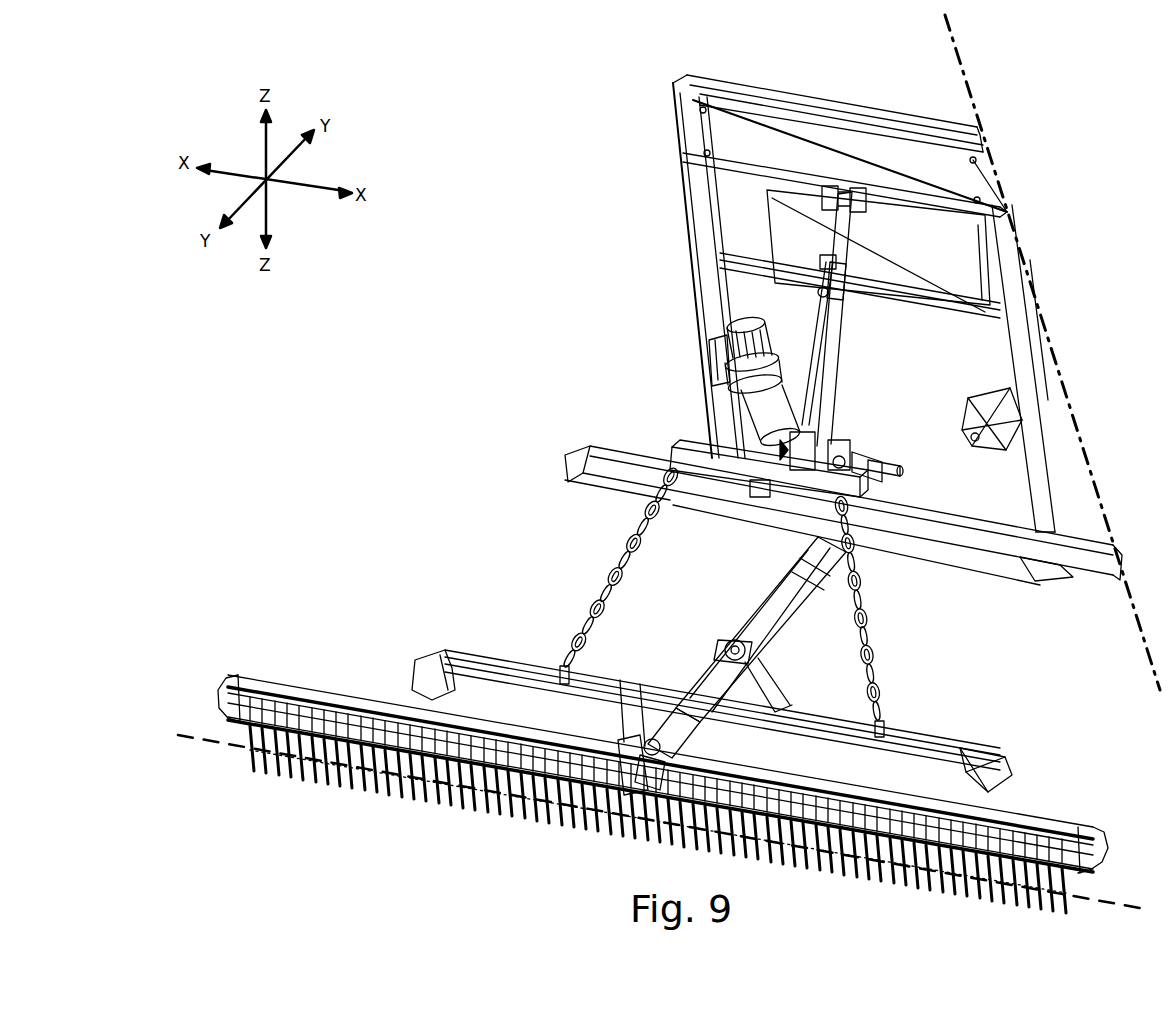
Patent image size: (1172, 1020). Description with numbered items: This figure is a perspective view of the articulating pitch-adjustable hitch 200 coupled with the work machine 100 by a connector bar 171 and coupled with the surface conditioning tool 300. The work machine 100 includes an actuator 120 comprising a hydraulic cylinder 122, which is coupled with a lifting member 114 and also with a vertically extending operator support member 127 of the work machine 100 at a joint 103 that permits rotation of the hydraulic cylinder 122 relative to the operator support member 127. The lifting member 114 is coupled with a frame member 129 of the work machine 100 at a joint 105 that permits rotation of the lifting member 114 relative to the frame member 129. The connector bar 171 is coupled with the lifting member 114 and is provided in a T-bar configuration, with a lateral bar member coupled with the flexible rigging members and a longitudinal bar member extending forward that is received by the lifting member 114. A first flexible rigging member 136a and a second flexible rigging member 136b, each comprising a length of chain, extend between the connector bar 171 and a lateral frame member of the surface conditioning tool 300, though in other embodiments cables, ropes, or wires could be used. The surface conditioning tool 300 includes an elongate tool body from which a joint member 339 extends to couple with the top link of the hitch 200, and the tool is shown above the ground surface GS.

The work machine 100 is at (548, 196).
The operator support member 127 is at (673, 181).
The actuator 120 is at (798, 308).
The joint 103 is at (880, 200).
The hydraulic cylinder 122 is at (843, 323).
The lifting member 114 is at (845, 451).
The joint 105 is at (880, 456).
The frame member 129 is at (907, 498).
The connector bar 171 is at (748, 482).
The first flexible rigging member 136a is at (608, 572).
The second flexible rigging member 136b is at (870, 625).
The articulating pitch-adjustable hitch 200 is at (406, 568).
The surface conditioning tool 300 is at (196, 691).
The joint member 339 is at (625, 738).
The ground surface GS is at (1113, 902).